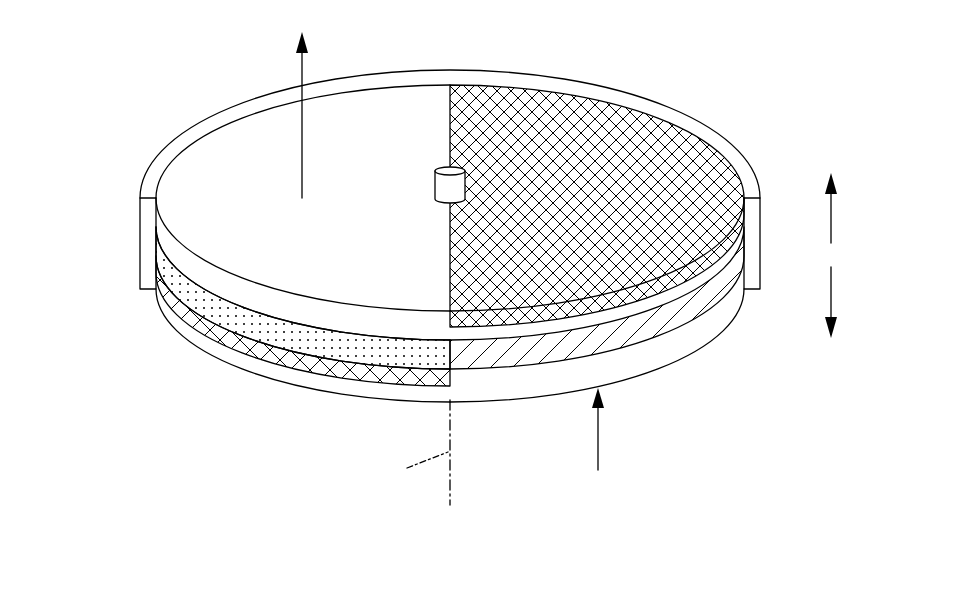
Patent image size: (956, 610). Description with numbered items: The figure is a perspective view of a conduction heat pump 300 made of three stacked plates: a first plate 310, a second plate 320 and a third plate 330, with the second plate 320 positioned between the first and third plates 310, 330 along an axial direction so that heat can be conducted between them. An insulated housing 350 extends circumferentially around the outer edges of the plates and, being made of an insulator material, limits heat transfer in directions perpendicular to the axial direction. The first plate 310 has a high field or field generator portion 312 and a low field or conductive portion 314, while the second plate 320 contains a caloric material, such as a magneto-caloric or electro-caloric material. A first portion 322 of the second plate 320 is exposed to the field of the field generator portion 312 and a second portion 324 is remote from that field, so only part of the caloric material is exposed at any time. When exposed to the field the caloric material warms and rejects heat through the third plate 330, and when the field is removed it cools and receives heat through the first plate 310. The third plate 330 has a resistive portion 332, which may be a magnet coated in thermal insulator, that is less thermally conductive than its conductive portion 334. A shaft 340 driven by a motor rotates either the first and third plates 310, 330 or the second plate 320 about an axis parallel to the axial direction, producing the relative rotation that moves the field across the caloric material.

The conduction heat pump 300 is at (730, 88).
The first plate 310 is at (160, 300).
The field generator portion 312 is at (323, 368).
The conductive portion 314 is at (687, 342).
The second plate 320 is at (158, 268).
The first portion 322 is at (228, 320).
The second portion 324 is at (495, 358).
The third plate 330 is at (163, 240).
The resistive portion 332 is at (553, 113).
The conductive portion 334 is at (402, 108).
The shaft 340 is at (435, 190).
The insulated housing 350 is at (740, 168).